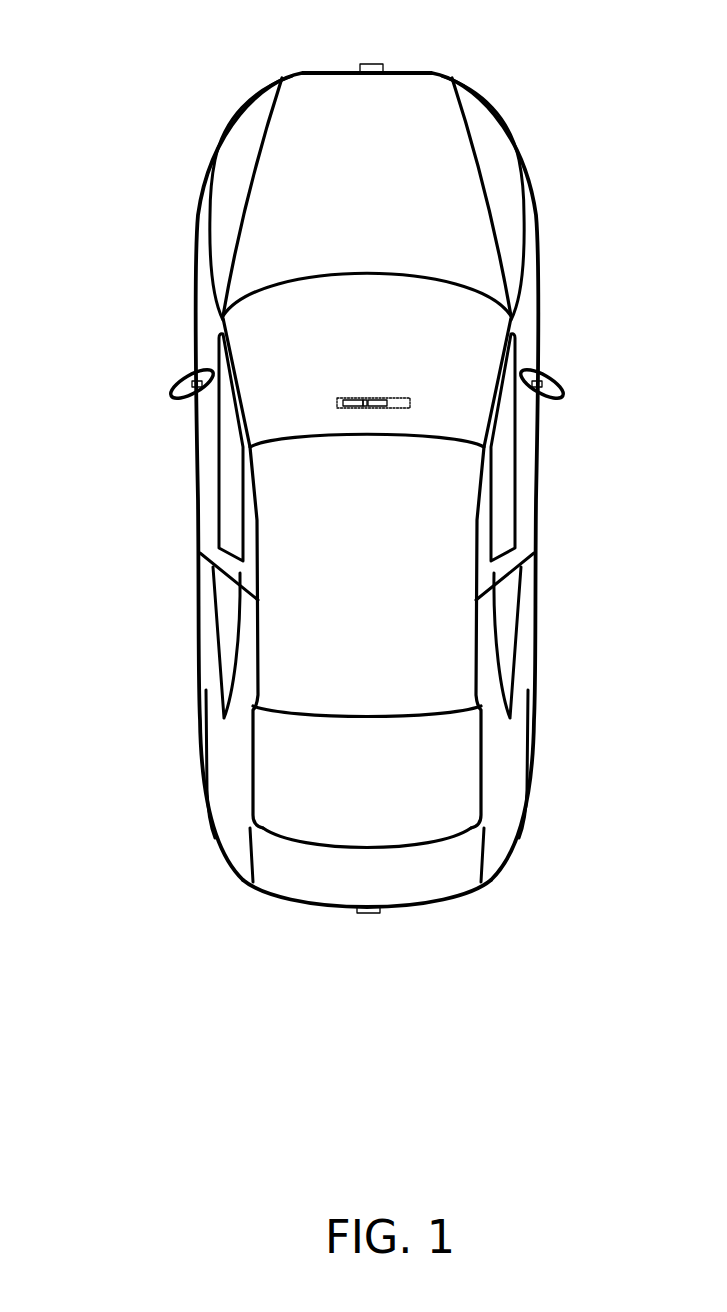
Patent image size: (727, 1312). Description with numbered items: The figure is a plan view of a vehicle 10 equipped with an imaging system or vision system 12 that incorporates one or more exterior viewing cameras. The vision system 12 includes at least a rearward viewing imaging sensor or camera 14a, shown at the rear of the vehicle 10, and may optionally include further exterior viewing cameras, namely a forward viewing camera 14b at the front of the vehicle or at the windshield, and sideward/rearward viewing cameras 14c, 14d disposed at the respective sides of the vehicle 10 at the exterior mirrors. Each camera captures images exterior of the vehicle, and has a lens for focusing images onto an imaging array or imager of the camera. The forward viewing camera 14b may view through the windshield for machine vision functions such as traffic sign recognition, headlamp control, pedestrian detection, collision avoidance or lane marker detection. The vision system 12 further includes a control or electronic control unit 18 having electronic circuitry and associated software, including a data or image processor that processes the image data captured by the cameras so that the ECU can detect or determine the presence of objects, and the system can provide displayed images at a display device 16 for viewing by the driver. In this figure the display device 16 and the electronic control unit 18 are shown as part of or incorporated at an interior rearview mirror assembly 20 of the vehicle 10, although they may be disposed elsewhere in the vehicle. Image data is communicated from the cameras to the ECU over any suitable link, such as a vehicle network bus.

The vehicle 10 is at (133, 88).
The vision system 12 is at (328, 922).
The rearward viewing camera 14a is at (372, 912).
The forward viewing camera 14b is at (380, 62).
The sideward/rearward viewing camera 14c is at (183, 380).
The sideward/rearward viewing camera 14d is at (552, 377).
The display device 16 is at (353, 400).
The electronic control unit 18 is at (372, 400).
The interior rearview mirror assembly 20 is at (410, 397).